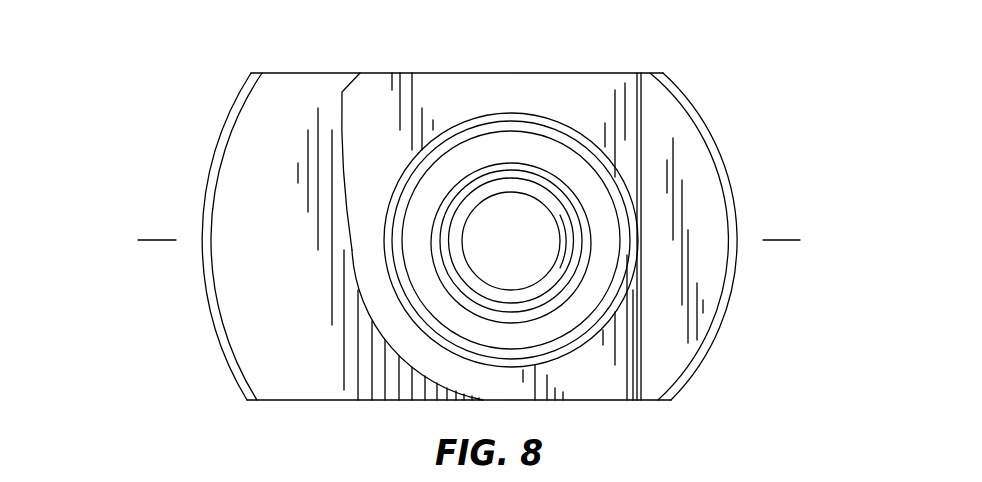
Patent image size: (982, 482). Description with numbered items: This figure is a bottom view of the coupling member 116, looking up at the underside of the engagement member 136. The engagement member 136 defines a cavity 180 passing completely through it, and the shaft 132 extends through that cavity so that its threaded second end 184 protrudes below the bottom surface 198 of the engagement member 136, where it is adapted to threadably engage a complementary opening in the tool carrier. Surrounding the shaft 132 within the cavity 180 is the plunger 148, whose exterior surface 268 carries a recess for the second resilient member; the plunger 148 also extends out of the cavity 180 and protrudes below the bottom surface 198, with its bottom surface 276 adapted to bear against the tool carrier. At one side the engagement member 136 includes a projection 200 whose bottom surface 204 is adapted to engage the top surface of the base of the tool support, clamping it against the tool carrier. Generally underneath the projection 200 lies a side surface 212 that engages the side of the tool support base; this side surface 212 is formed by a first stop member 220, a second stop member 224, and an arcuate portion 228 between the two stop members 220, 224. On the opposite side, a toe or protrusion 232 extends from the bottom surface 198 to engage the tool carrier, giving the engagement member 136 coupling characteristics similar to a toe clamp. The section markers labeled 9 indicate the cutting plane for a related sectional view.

The coupling member 116 is at (732, 60).
The engagement member 136 is at (241, 392).
The projection 200 is at (220, 344).
The bottom surface 204 is at (248, 160).
The first stop member 220 is at (340, 105).
The bottom surface 198 is at (365, 110).
The side surface 212 is at (367, 311).
The arcuate portion 228 is at (393, 347).
The plunger 148 is at (616, 169).
The exterior surface 268 is at (388, 250).
The cavity 180 is at (579, 321).
The shaft 132 is at (522, 166).
The bottom surface 276 is at (603, 259).
The second end 184 is at (495, 227).
The second stop member 224 is at (615, 400).
The protrusion 232 is at (673, 313).
The section line 9- 9 is at (782, 240).